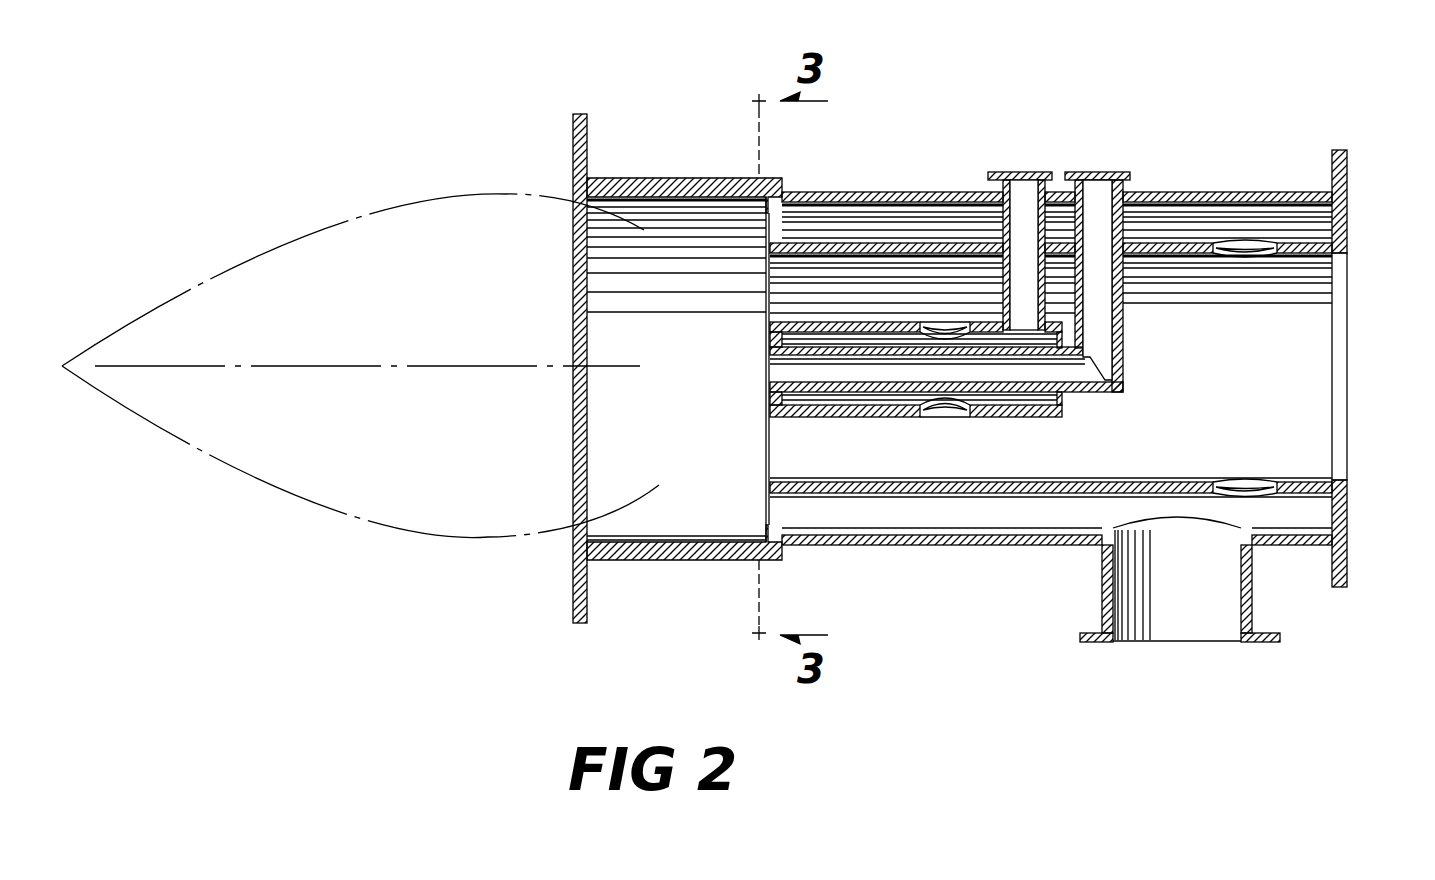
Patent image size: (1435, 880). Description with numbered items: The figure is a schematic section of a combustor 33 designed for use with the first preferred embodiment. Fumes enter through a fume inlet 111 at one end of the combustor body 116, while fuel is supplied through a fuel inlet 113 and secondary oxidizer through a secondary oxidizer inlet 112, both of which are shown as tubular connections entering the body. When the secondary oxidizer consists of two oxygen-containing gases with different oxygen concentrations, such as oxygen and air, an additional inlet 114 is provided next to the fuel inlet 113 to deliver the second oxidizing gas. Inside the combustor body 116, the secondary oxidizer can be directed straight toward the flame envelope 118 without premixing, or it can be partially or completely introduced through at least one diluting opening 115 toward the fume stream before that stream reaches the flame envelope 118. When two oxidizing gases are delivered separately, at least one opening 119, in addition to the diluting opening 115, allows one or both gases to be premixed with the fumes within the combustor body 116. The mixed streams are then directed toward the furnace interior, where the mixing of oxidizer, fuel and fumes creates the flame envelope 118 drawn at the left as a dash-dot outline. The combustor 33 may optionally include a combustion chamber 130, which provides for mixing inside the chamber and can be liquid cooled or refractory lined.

The combustor 33 is at (672, 140).
The flame envelope 118 is at (313, 245).
The combustion chamber 130 is at (706, 384).
The fume inlet 111 is at (1340, 370).
The secondary oxidizer inlet 112 is at (1190, 620).
The fuel inlet 113 is at (1100, 180).
The additional inlet 114 is at (1020, 180).
The diluting opening 115 is at (1243, 258).
The combustor body 116 is at (925, 550).
The opening 119 is at (945, 330).